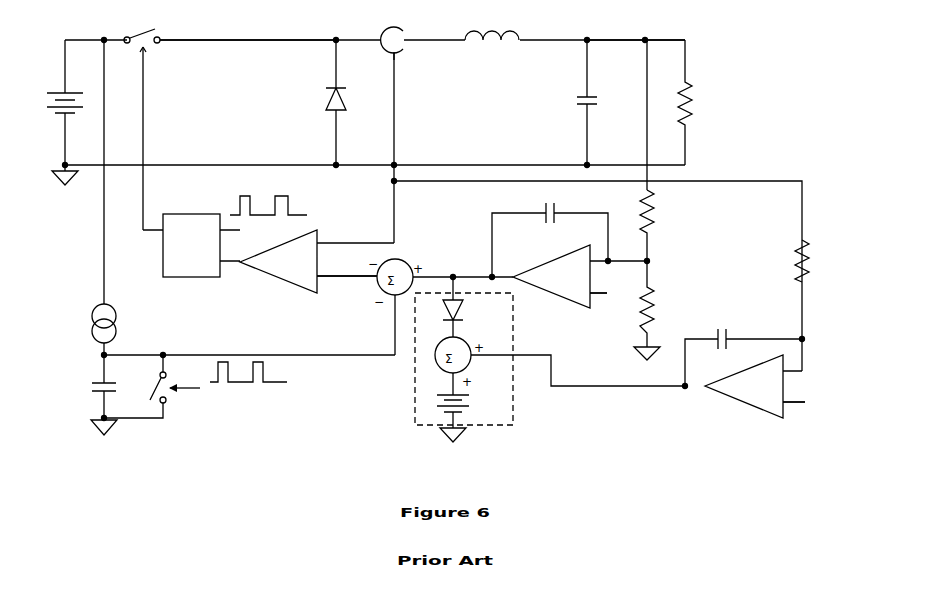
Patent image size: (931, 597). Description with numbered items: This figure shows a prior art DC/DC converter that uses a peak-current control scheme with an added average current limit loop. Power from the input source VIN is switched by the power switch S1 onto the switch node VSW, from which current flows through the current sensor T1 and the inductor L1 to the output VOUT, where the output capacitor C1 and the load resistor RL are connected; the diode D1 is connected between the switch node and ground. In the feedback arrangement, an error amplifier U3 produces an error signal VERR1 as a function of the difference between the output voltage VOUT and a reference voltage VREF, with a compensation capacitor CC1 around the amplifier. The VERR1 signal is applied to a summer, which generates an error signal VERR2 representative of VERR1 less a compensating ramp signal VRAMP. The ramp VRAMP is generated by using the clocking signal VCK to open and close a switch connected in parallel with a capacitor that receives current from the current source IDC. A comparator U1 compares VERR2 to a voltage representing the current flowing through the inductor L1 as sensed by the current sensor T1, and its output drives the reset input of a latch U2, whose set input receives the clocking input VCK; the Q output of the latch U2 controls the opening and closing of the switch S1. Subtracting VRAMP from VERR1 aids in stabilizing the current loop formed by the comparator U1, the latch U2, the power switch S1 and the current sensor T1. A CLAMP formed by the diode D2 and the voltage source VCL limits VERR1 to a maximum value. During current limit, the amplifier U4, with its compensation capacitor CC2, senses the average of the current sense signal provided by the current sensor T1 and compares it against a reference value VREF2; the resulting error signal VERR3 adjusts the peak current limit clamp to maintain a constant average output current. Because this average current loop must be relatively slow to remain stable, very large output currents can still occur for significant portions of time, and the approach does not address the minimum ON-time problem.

The input voltage source VIN is at (51, 102).
The power switch S1 is at (142, 28).
The switch voltage node VSW is at (248, 32).
The current sensor T1 is at (392, 35).
The inductor L1 is at (492, 28).
The output voltage VOUT is at (637, 31).
The diode D1 is at (322, 102).
The output capacitor C1 is at (599, 102).
The load resistor RL is at (697, 102).
The current source IDC is at (118, 329).
The compensating ramp signal VRAMP is at (249, 347).
The clocking signal VCK is at (258, 301).
The latch U2 is at (196, 256).
The comparator U1 is at (307, 267).
The error signal VERR2 is at (347, 268).
The error signal VERR1 is at (463, 268).
The compensation capacitor CC1 is at (550, 232).
The error amplifier U3 is at (580, 273).
The reference voltage VREF is at (608, 286).
The clamp CLAMP is at (466, 368).
The diode D2 is at (468, 307).
The voltage source VCL is at (467, 407).
The error signal VERR3 is at (578, 370).
The second compensation capacitor CC2 is at (743, 351).
The amplifier U4 is at (755, 386).
The reference value VREF2 is at (814, 402).